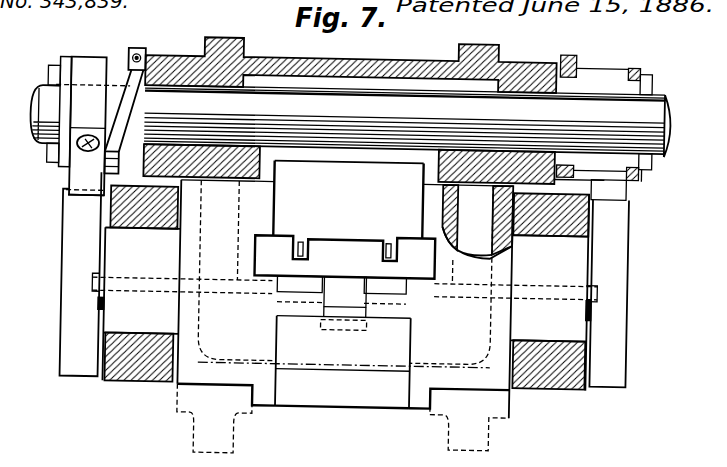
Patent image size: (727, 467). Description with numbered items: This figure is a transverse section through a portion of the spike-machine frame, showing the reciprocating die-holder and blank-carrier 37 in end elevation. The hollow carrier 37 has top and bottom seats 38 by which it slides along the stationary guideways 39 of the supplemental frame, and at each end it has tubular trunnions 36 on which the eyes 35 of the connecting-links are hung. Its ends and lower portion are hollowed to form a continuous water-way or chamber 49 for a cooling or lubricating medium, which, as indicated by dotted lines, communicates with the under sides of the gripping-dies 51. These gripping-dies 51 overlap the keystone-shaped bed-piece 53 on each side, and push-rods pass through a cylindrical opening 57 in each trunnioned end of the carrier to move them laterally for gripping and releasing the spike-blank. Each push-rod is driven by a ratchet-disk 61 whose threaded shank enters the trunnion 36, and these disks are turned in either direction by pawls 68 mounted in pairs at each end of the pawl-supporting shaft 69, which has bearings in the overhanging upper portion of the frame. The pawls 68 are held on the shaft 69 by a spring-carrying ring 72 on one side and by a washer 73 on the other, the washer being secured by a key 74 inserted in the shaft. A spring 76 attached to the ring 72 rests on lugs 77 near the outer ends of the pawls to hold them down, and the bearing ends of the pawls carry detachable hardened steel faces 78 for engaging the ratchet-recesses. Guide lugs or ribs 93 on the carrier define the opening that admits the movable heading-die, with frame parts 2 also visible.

The frame bar 2 is at (351, 64).
The eyes 35 is at (344, 371).
The trunnions 36 is at (345, 298).
The reciprocating die-holder and blank-carrier 37 is at (344, 372).
The top and bottom seats 38 is at (422, 183).
The stationary guideways 39 is at (246, 149).
The water-way or chamber 49 is at (456, 219).
The gripping-dies 51 is at (300, 281).
The bed-piece 53 is at (344, 297).
The cylindrical opening 57 is at (390, 282).
The ratchet-disk 61 is at (345, 280).
The pawls 68 is at (341, 130).
The pawl-supporting shaft 69 is at (350, 120).
The spring-carrying ring 72 is at (586, 58).
The washer 73 is at (62, 62).
The key 74 is at (45, 77).
The spring 76 is at (119, 83).
The lugs 77 is at (62, 200).
The hardened steel faces 78 is at (85, 184).
The guide lugs or ribs 93 is at (301, 241).